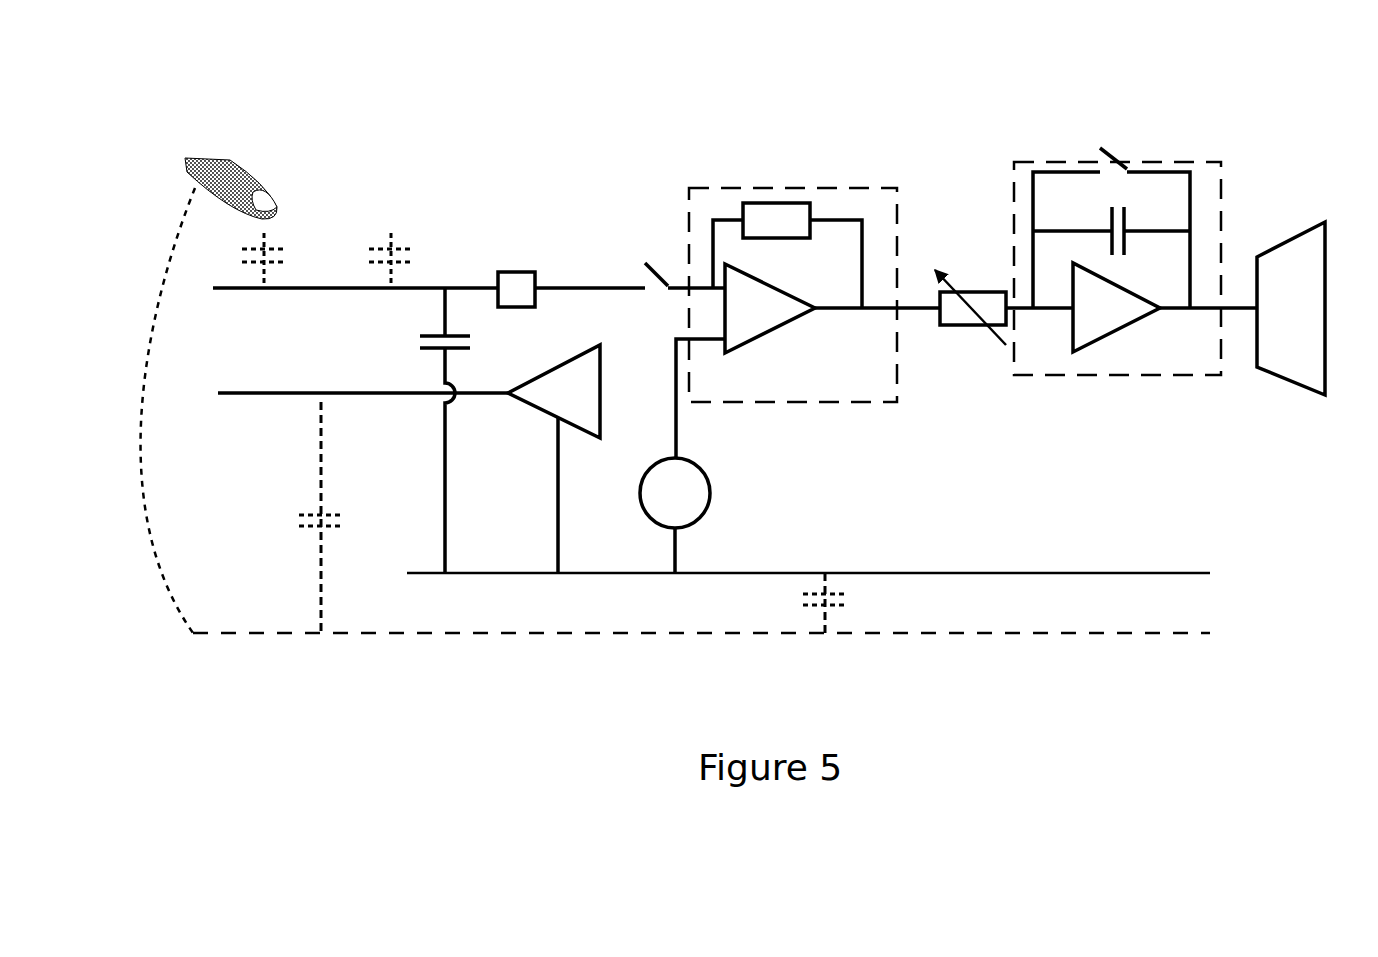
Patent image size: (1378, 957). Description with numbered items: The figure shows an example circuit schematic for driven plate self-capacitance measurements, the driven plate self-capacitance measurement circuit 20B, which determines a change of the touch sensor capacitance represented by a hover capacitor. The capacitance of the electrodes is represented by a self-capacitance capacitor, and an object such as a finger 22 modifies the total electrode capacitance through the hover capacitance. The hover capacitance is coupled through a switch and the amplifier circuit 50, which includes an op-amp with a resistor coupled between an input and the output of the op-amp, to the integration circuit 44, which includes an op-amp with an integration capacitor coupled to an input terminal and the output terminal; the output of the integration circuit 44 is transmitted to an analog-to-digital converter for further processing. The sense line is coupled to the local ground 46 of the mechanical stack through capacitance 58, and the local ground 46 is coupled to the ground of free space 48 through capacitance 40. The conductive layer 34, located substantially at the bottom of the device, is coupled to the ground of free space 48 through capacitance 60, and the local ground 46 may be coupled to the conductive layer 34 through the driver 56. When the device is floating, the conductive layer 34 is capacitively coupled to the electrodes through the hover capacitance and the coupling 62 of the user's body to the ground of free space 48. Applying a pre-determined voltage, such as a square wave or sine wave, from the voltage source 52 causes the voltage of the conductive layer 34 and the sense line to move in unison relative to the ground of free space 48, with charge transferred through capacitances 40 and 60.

The driven plate self-capacitance measurement circuit 20B is at (797, 88).
The finger 22 is at (205, 148).
The coupling of the body of the user to ground of free space 62 is at (136, 327).
The capacitance 58 is at (416, 346).
The conductive layer 34 is at (251, 400).
The capacitance 60 is at (291, 523).
The driver 56 is at (554, 459).
The amplifier circuit 50 is at (808, 322).
The voltage source 52 is at (716, 494).
The integration circuit 44 is at (1130, 257).
The capacitance 40 is at (793, 598).
The local ground 46 is at (1147, 577).
The ground of free space 48 is at (970, 641).